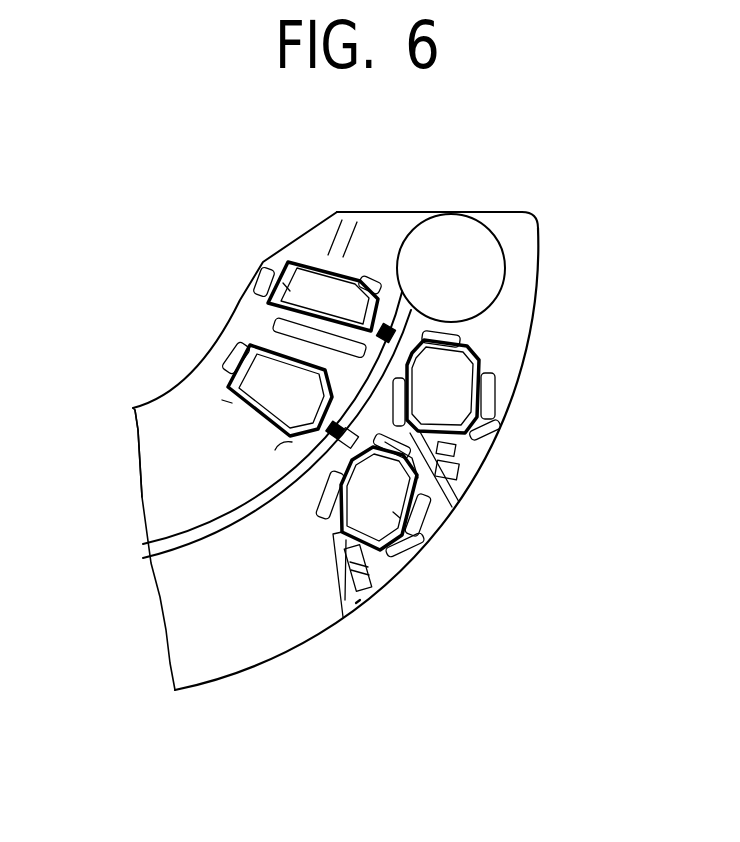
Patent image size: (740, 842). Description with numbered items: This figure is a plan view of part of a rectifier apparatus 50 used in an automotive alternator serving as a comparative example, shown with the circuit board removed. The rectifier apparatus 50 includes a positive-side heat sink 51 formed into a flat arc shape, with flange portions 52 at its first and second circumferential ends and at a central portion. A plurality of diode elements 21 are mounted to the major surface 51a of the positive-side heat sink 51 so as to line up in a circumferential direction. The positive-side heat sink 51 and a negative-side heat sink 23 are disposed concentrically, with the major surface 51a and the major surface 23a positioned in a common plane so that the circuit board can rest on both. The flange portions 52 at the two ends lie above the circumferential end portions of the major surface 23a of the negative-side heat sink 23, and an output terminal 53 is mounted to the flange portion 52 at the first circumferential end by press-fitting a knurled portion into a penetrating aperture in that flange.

The rectifier apparatus 50 is at (150, 213).
The positive-side heat sink 51 is at (211, 352).
The major surface 51a is at (183, 417).
The flange portion 52 is at (383, 230).
The output terminal 53 is at (483, 275).
The diode element 21 is at (289, 292).
The negative-side heat sink 23 is at (371, 606).
The major surface 23a is at (310, 607).